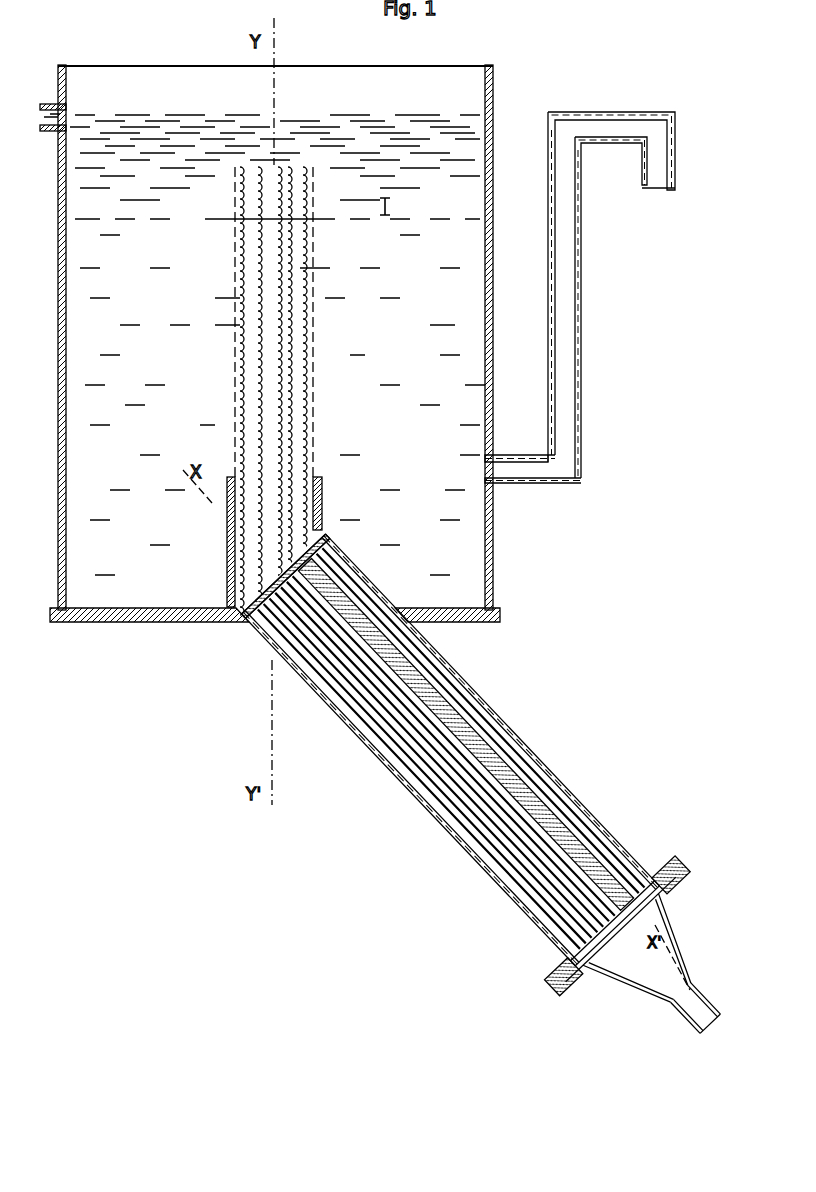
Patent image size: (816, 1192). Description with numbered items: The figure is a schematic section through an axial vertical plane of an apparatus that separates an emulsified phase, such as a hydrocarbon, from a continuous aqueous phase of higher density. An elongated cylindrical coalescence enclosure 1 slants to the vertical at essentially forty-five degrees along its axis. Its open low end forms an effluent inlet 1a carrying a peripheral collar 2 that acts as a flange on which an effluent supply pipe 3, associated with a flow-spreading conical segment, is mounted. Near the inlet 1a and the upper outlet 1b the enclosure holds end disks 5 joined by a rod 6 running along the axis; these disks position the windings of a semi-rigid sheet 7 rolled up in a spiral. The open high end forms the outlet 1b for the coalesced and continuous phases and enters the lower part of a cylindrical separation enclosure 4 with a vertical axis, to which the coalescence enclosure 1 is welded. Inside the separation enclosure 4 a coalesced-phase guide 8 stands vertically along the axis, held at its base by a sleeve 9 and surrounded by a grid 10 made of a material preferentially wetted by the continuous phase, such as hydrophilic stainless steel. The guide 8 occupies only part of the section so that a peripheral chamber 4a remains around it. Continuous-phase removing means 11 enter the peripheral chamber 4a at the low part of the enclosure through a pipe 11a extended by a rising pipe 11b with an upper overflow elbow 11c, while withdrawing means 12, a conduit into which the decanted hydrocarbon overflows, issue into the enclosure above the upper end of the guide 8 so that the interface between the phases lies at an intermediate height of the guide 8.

The coalescence enclosure 1 is at (496, 799).
The effluent inlet 1a is at (650, 961).
The outlet 1b is at (232, 590).
The peripheral collar 2 is at (563, 977).
The effluent supply pipe 3 is at (696, 1008).
The separation enclosure 4 is at (287, 343).
The peripheral chamber 4a is at (493, 582).
The end disks 5 is at (671, 875).
The rod 6 is at (451, 748).
The semi-rigid sheet 7 is at (450, 750).
The coalesced-phase guide 8 is at (292, 428).
The sleeve 9 is at (322, 506).
The grid 10 is at (315, 372).
The continuous-phase removing means 11 is at (580, 279).
The pipe 11a is at (522, 458).
The rising pipe 11b is at (578, 300).
The upper overflow elbow 11c is at (634, 118).
The withdrawing means 12 is at (66, 112).